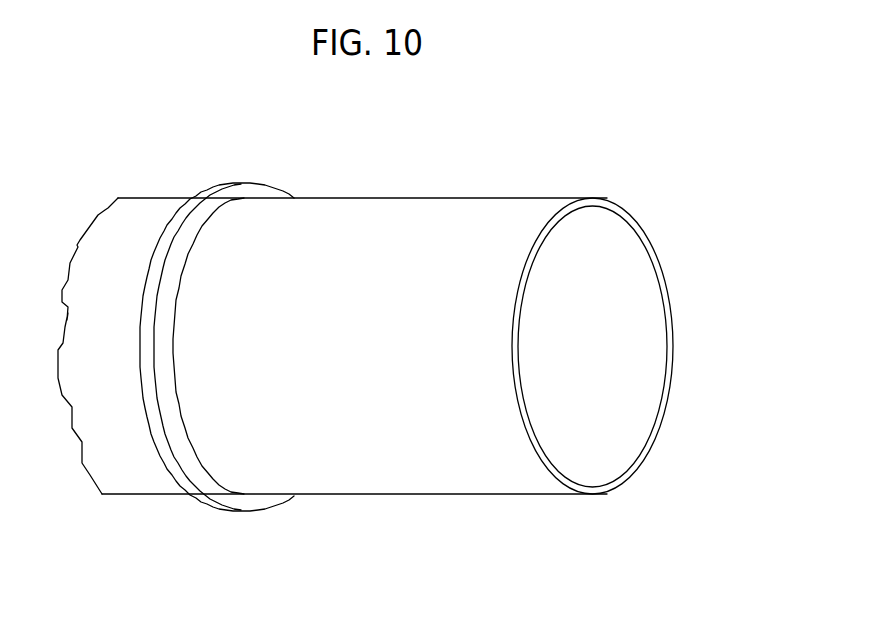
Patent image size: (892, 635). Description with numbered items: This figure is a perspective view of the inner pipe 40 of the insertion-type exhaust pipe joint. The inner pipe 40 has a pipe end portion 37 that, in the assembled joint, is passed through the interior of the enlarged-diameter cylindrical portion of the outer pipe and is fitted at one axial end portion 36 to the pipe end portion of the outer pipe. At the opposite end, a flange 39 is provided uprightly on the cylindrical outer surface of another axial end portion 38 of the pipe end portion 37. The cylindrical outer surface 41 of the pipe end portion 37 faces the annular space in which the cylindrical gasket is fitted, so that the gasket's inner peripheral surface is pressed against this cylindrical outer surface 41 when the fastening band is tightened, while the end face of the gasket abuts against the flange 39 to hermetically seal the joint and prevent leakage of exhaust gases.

The one axial end portion 36 is at (535, 208).
The pipe end portion 37 is at (377, 208).
The another axial end portion 38 is at (175, 210).
The flange 39 is at (128, 480).
The inner pipe 40 is at (131, 190).
The cylindrical outer surface 41 is at (338, 480).